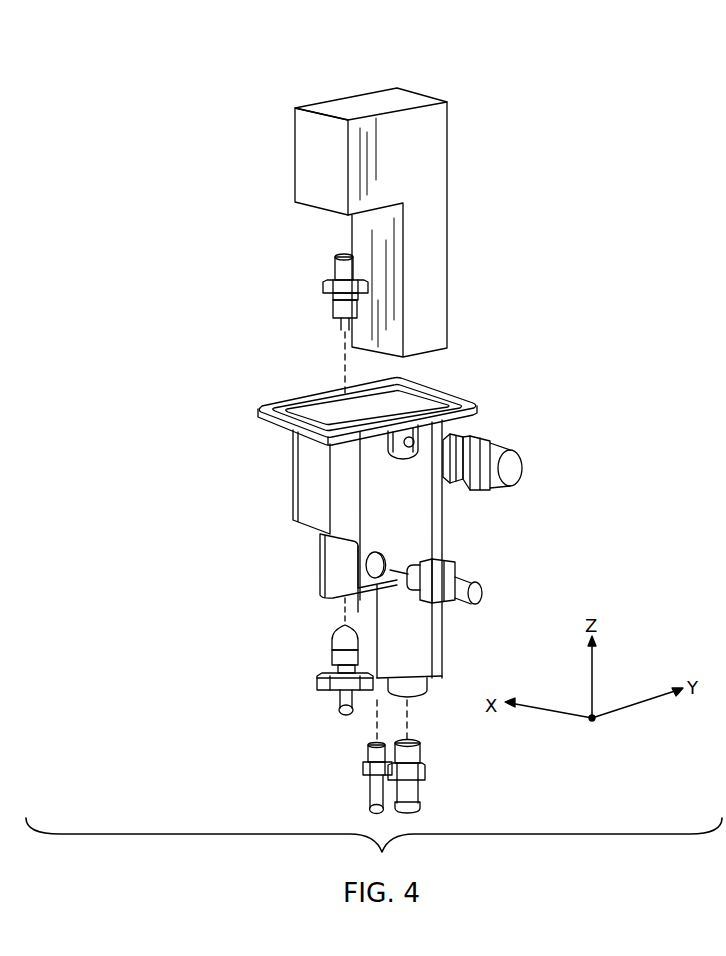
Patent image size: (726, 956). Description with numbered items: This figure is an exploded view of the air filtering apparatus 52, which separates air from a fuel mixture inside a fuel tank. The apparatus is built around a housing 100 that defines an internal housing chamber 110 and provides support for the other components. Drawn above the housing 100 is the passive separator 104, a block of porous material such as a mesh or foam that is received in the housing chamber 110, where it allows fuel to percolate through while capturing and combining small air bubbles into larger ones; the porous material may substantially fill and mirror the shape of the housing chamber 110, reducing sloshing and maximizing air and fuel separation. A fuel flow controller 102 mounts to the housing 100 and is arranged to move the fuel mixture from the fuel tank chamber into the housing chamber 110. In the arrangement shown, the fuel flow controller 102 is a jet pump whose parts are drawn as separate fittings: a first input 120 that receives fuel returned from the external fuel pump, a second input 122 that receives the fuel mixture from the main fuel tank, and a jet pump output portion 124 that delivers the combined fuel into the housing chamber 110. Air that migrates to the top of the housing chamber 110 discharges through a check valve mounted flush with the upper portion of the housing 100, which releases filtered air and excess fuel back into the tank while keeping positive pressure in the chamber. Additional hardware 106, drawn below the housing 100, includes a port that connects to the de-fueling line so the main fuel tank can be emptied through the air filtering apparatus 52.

The air filtering apparatus 52 is at (196, 52).
The passive separator 104 is at (443, 157).
The jet pump output portion 124 is at (345, 266).
The fuel flow controller 102 is at (333, 328).
The housing chamber 110 is at (306, 400).
The housing 100 is at (313, 557).
The second input 122 is at (457, 573).
The first input 120 is at (317, 684).
The additional hardware 106 is at (436, 788).